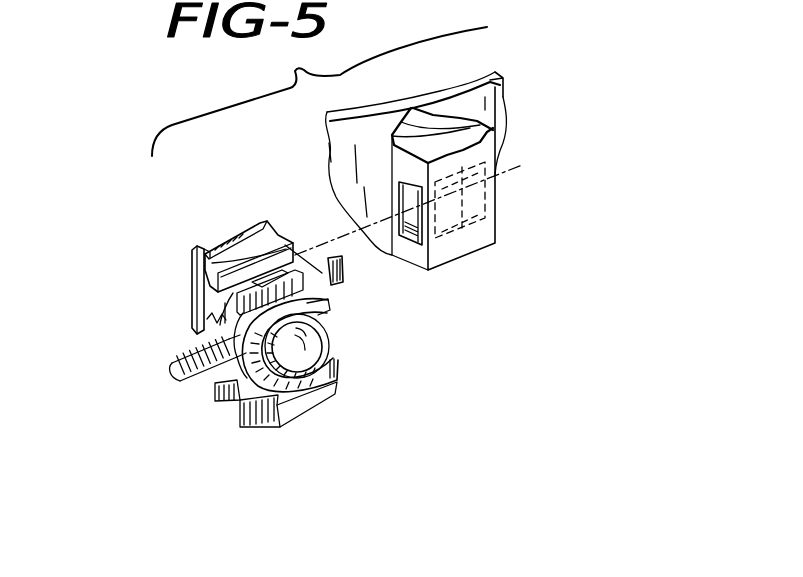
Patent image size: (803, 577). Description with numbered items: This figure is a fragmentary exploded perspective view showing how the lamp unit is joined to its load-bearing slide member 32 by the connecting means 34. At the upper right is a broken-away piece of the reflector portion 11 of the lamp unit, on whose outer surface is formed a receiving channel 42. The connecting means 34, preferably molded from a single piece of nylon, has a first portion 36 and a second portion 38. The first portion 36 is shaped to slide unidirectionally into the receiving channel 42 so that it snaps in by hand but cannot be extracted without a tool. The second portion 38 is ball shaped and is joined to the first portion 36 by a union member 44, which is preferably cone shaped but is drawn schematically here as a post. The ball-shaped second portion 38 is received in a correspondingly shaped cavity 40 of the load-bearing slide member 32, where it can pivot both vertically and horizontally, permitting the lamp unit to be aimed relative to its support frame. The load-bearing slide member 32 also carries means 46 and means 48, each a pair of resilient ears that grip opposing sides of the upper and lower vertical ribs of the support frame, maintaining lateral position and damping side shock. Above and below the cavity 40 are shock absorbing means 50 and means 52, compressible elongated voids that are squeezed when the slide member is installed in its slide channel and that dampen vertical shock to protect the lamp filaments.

The reflector portion 11 is at (503, 97).
The receiving channel 42 is at (405, 198).
The load-bearing slide member 32 is at (390, 387).
The connecting means 34 is at (187, 277).
The first portion 36 is at (237, 250).
The second portion 38 is at (323, 345).
The cavity 40 is at (333, 332).
The union member 44 is at (227, 287).
The means for resiliently engaging upper vertical rib 46 is at (342, 267).
The means for resiliently engaging lower vertical rib 48 is at (242, 422).
The means for absorbing shock from upper vertical rib 50 is at (303, 312).
The means for absorbing shock from lower vertical rib 52 is at (307, 378).